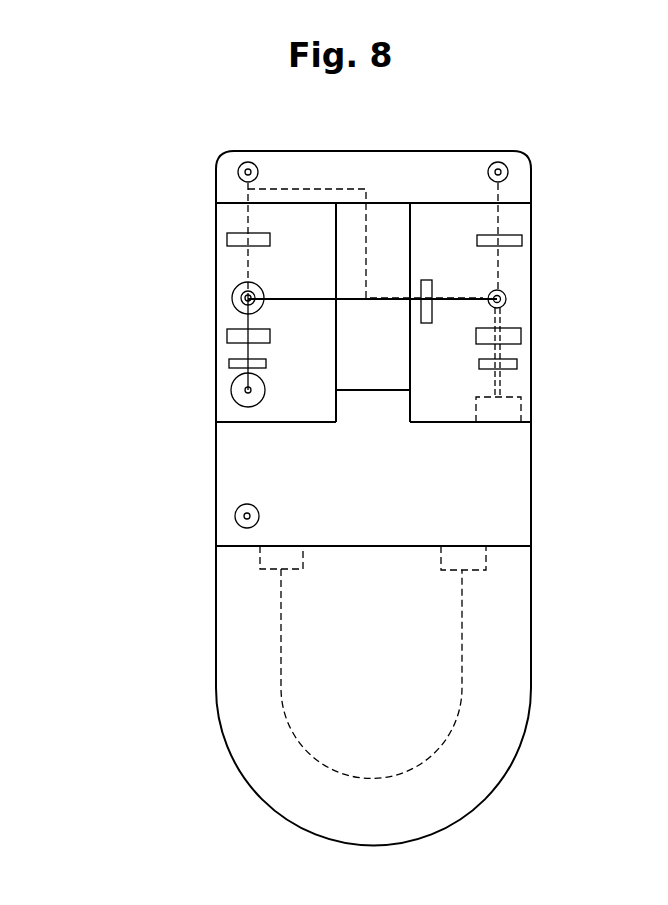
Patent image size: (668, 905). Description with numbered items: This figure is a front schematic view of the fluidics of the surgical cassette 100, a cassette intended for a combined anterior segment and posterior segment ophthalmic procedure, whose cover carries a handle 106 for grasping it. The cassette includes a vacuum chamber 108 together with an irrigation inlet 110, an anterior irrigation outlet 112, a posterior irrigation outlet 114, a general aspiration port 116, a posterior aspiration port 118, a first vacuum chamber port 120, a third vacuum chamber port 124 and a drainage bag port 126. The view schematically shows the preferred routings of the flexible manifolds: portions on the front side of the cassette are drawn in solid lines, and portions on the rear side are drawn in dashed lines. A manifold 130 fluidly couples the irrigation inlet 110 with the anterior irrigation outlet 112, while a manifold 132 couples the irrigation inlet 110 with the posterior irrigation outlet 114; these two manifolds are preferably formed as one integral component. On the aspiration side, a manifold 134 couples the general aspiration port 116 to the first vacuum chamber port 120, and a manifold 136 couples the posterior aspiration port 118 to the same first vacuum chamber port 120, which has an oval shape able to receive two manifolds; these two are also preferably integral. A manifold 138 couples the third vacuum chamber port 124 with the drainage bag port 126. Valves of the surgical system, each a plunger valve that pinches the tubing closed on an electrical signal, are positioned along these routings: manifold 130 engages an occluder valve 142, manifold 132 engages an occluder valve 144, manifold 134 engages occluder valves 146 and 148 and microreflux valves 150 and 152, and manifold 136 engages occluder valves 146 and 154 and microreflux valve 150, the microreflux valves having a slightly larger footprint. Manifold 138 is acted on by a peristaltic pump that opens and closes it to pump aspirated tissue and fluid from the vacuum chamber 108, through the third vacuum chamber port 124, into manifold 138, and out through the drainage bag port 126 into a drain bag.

The surgical cassette 100 is at (498, 97).
The handle 106 is at (397, 365).
The vacuum chamber 108 is at (380, 480).
The irrigation inlet 110 is at (240, 168).
The anterior irrigation outlet 112 is at (505, 293).
The posterior irrigation outlet 114 is at (235, 291).
The general aspiration port 116 is at (232, 390).
The posterior aspiration port 118 is at (508, 170).
The first vacuum chamber port 120 is at (521, 408).
The third vacuum chamber port 124 is at (468, 557).
The drainage bag port 126 is at (235, 516).
The manifold 130 is at (462, 297).
The manifold 132 is at (248, 213).
The manifold 134 is at (245, 322).
The manifold 136 is at (502, 213).
The manifold 138 is at (450, 737).
The occluder valve 142 is at (426, 280).
The occluder valve 144 is at (227, 240).
The occluder valve 146 is at (517, 364).
The occluder valve 148 is at (229, 364).
The microreflux valve 150 is at (521, 337).
The microreflux valve 152 is at (227, 336).
The occluder valve 154 is at (522, 240).